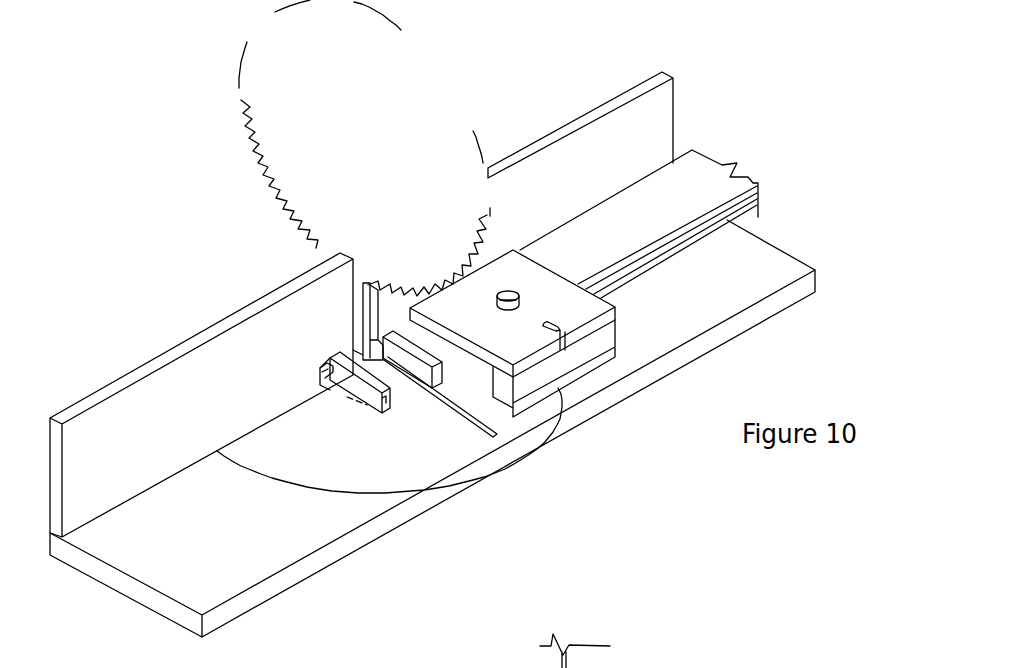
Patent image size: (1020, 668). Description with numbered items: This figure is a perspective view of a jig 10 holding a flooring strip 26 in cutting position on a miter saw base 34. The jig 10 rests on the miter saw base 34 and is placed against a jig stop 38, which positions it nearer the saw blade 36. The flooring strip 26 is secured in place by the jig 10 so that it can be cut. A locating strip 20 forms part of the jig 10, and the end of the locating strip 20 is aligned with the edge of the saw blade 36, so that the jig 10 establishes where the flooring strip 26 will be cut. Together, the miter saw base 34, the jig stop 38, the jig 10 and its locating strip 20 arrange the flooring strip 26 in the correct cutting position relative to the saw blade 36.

The jig 10 is at (566, 362).
The locating strip 20 is at (447, 388).
The flooring strip 26 is at (678, 197).
The miter saw base 34 is at (240, 540).
The saw blade 36 is at (455, 90).
The jig stop 38 is at (388, 324).